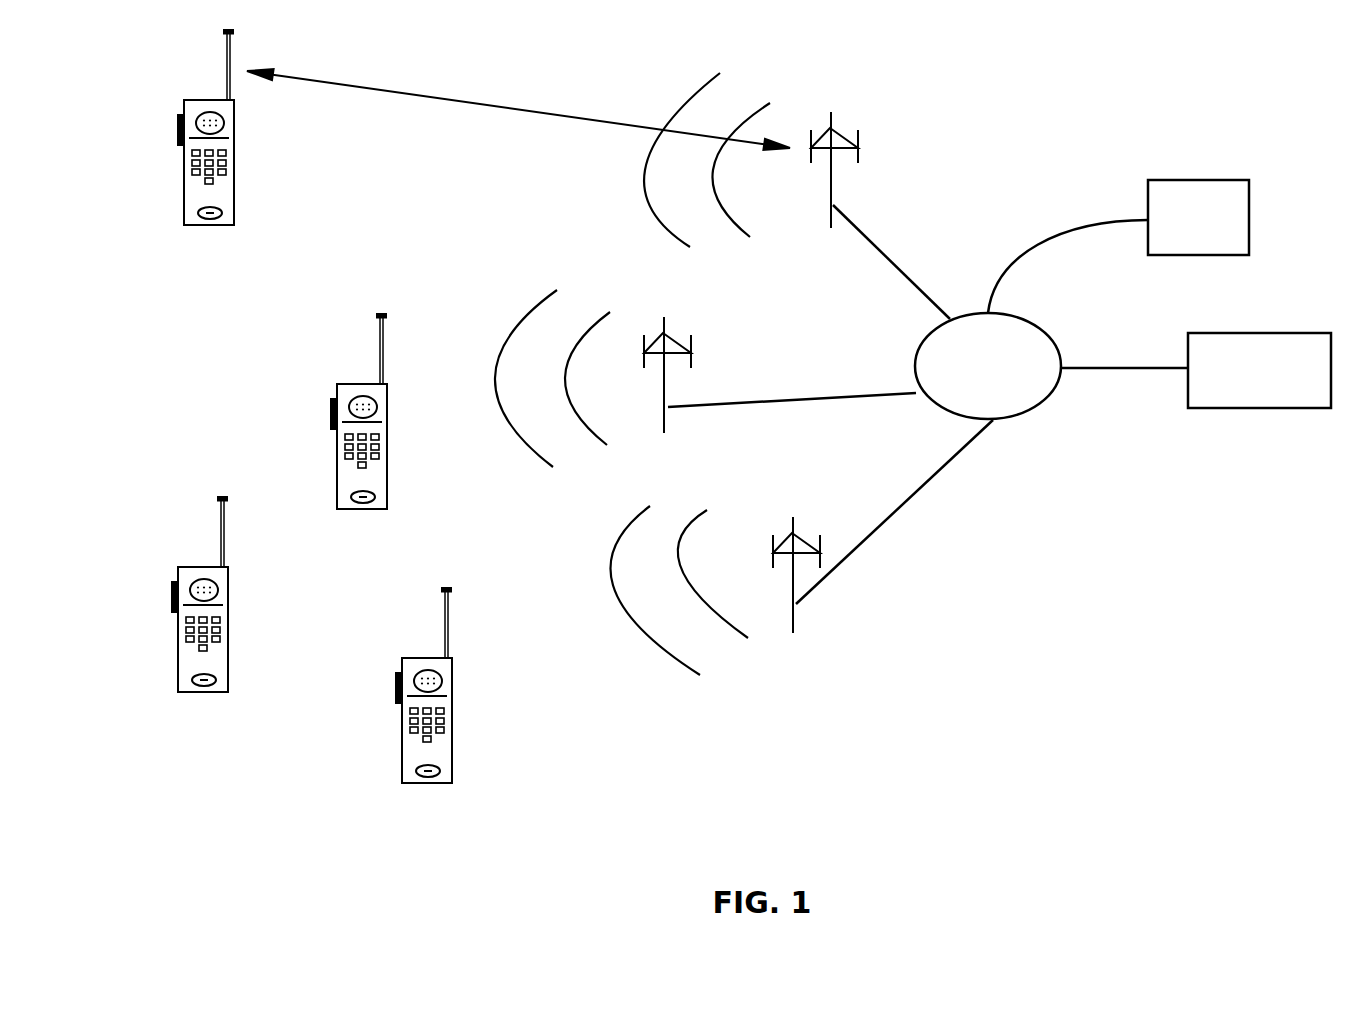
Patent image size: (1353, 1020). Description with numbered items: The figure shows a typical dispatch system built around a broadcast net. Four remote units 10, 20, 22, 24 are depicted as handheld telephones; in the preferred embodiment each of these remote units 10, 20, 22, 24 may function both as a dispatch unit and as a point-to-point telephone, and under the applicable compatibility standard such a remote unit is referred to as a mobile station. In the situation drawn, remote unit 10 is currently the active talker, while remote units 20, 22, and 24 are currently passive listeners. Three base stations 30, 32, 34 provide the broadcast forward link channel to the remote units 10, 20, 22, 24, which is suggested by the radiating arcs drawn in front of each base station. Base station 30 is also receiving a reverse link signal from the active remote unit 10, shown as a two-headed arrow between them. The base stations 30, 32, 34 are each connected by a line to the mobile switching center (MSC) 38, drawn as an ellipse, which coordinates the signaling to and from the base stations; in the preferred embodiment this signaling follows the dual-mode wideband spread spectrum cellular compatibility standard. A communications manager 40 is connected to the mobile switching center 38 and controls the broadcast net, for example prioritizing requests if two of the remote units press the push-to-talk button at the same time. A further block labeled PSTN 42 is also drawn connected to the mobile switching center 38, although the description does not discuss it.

The remote unit 10 is at (236, 133).
The remote unit 20 is at (389, 417).
The remote unit 22 is at (230, 600).
The remote unit 24 is at (454, 691).
The base station 30 is at (842, 132).
The base station 32 is at (686, 342).
The base station 34 is at (812, 542).
The mobile switching center (MSC) 38 is at (1057, 340).
The communications manager 40 is at (1285, 333).
The public switched telephone network (PSTN) 42 is at (1208, 180).